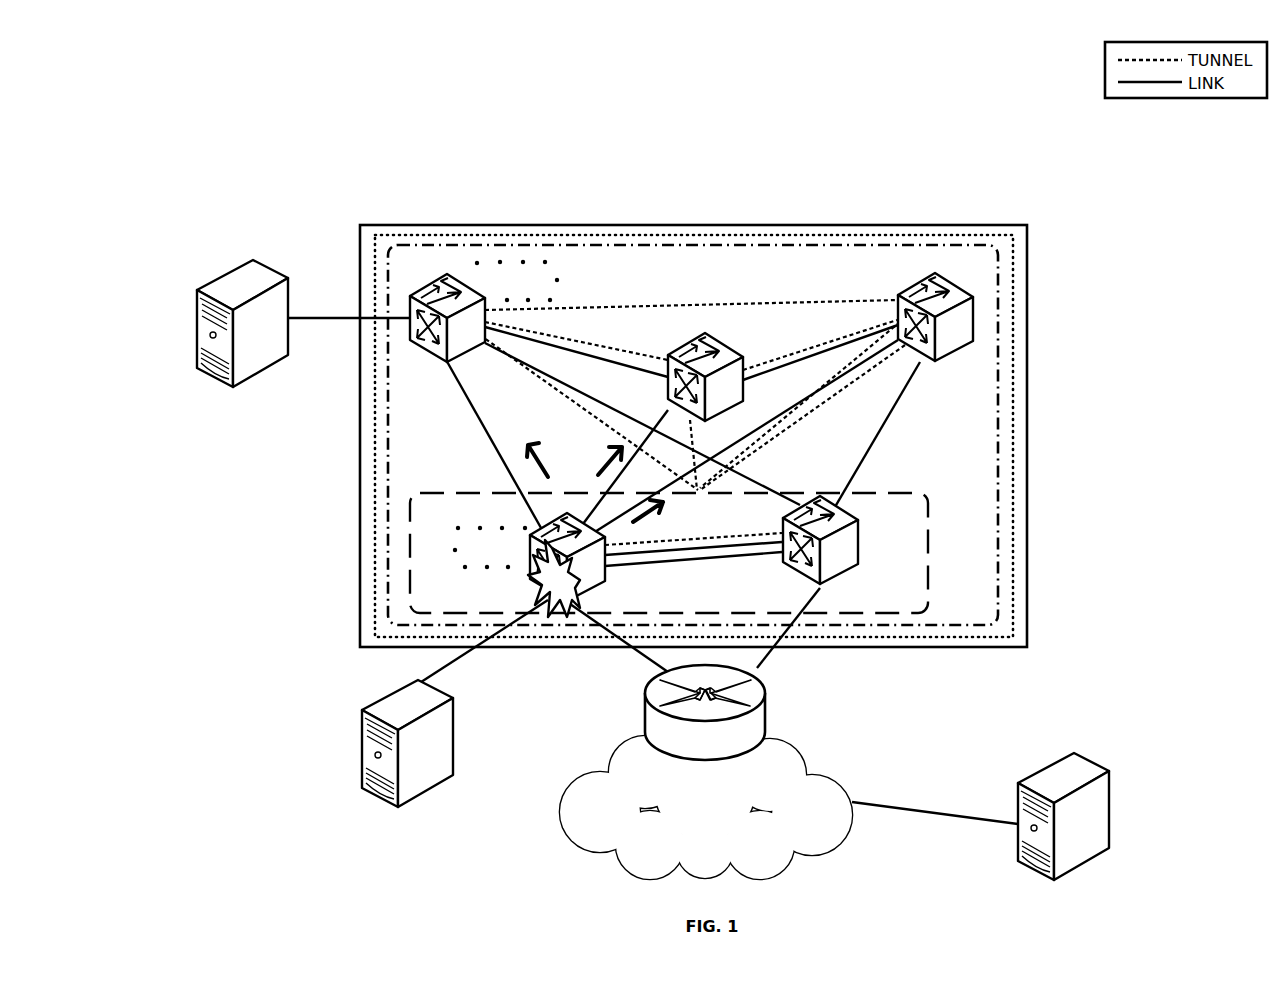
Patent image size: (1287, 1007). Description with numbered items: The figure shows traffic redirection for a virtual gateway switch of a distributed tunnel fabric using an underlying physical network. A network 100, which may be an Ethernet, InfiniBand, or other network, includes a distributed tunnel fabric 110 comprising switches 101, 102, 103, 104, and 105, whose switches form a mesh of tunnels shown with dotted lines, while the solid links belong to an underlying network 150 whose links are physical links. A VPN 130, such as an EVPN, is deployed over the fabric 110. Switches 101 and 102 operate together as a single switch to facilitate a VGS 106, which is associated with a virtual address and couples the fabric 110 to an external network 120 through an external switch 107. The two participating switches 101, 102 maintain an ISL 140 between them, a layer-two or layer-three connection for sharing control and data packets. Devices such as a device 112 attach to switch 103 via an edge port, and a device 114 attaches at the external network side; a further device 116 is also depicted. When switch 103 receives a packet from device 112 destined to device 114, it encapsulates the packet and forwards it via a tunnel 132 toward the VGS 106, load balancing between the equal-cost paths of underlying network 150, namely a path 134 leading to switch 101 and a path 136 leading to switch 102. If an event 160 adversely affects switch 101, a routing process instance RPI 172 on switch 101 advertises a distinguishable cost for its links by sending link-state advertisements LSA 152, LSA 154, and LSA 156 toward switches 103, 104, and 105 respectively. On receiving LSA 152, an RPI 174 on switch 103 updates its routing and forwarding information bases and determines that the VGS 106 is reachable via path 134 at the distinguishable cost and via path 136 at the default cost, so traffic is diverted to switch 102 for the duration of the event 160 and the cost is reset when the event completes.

The network 100 is at (185, 180).
The switch 101 is at (605, 578).
The switch 102 is at (857, 540).
The switch 103 is at (475, 283).
The switch 104 is at (725, 342).
The switch 105 is at (945, 340).
The virtual gateway switch (VGS) 106 is at (912, 637).
The external switch 107 is at (765, 718).
The distributed tunnel fabric 110 is at (903, 160).
The device 112 is at (197, 350).
The device 114 is at (1092, 862).
The end device 116 is at (435, 787).
The external network 120 is at (706, 807).
The VPN 130 is at (1013, 345).
The tunnel 132 is at (550, 402).
The path 134 is at (503, 448).
The path 136 is at (613, 428).
The inter-switch link (ISL) 140 is at (755, 553).
The underlying network 150 is at (998, 472).
The link-state advertisement (LSA) 152 is at (538, 462).
The link-state advertisement (LSA) 154 is at (604, 464).
The link-state advertisement (LSA) 156 is at (652, 505).
The event 160 is at (568, 620).
The routing process instance (RPI) 172 is at (490, 547).
The routing process instance (RPI) 174 is at (517, 281).